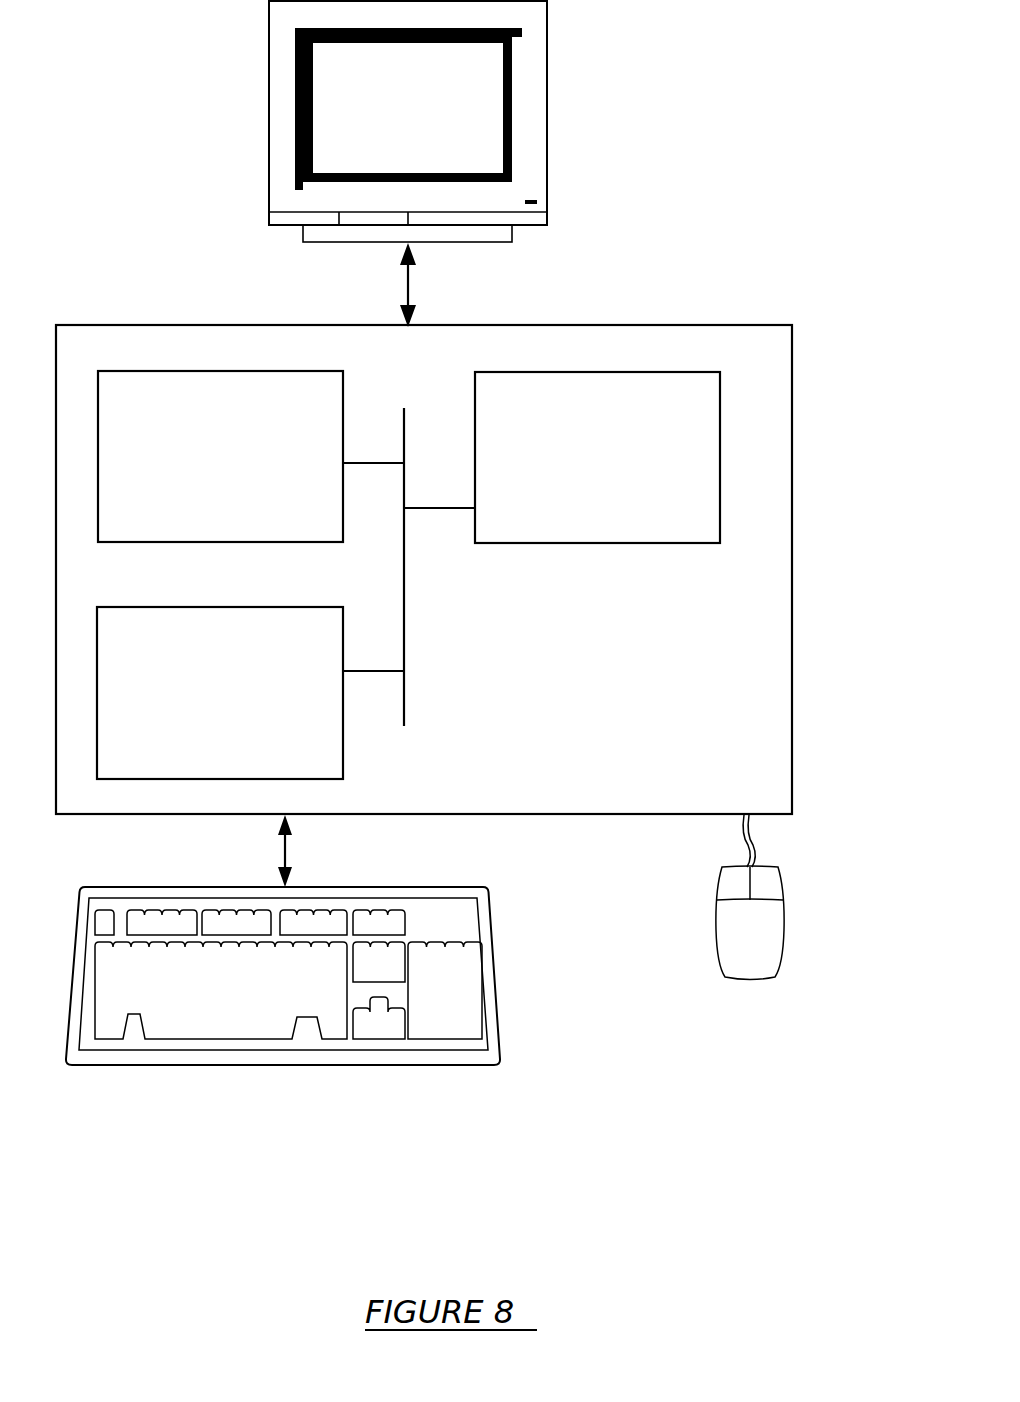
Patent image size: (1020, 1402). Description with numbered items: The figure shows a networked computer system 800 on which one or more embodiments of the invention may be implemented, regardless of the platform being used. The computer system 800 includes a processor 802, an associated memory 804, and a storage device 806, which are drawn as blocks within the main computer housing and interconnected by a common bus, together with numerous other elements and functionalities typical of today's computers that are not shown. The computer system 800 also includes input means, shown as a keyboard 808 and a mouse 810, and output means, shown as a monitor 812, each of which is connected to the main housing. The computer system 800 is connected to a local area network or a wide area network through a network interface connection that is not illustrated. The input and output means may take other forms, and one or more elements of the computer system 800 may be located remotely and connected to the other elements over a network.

The networked computer system 800 is at (483, 470).
The processor 802 is at (638, 471).
The memory 804 is at (243, 470).
The storage device 806 is at (239, 708).
The keyboard 808 is at (233, 1015).
The mouse 810 is at (773, 947).
The monitor 812 is at (430, 125).